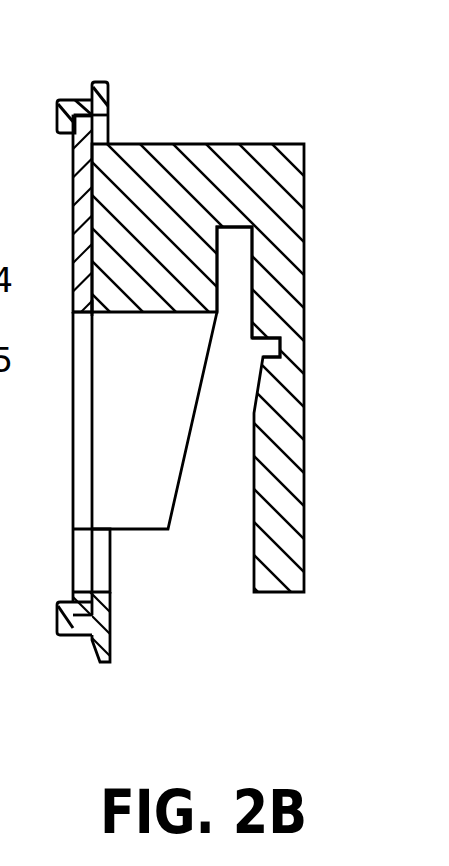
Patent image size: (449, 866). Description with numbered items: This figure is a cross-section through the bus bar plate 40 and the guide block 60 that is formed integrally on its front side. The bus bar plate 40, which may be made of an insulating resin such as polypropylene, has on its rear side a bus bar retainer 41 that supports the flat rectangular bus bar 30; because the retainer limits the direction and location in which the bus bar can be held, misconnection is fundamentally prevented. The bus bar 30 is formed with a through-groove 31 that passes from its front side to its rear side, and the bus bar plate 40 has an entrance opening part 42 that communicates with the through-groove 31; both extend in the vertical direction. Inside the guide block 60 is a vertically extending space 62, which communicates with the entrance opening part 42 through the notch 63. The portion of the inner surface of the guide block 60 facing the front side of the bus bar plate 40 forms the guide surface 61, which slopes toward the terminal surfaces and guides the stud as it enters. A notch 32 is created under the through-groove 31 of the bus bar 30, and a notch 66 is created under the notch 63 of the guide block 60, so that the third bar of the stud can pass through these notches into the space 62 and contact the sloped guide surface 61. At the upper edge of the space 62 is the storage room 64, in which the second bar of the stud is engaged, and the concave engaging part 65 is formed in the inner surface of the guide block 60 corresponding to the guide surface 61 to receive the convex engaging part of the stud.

The bus bar 30 is at (76, 232).
The through-groove 31 is at (74, 318).
The notch 32 is at (85, 572).
The bus bar plate 40 is at (100, 81).
The bus bar retainer 41 is at (55, 110).
The entrance opening part 42 is at (95, 303).
The guide block 60 is at (237, 160).
The guide surface 61 is at (172, 518).
The space 62 is at (245, 449).
The notch 63 is at (150, 475).
The storage room 64 is at (235, 261).
The concave engaging part 65 is at (263, 352).
The notch 66 is at (105, 548).